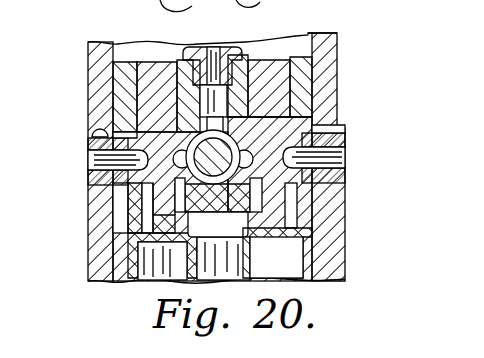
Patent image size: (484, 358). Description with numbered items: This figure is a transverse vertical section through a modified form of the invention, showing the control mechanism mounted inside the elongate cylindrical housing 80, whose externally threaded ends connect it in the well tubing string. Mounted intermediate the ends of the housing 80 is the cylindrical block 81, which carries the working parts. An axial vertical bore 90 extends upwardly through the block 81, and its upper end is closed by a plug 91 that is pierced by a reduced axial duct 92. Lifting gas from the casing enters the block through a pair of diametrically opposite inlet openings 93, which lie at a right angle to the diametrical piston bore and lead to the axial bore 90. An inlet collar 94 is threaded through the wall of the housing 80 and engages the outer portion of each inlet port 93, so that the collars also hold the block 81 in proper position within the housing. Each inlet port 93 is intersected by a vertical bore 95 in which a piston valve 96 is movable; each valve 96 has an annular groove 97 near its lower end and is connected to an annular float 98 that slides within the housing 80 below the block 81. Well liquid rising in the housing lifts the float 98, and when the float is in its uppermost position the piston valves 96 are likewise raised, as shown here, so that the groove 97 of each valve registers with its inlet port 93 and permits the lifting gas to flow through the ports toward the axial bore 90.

The housing 80 is at (340, 46).
The cylindrical block 81 is at (340, 70).
The axial vertical bore 90 is at (293, 105).
The plug 91 is at (176, 43).
The reduced axial duct 92 is at (217, 30).
The inlet openings 93 is at (101, 190).
The inlet collar 94 is at (100, 126).
The vertical bore 95 is at (123, 102).
The piston valve 96 is at (137, 78).
The annular groove 97 is at (98, 161).
The annular float 98 is at (345, 255).